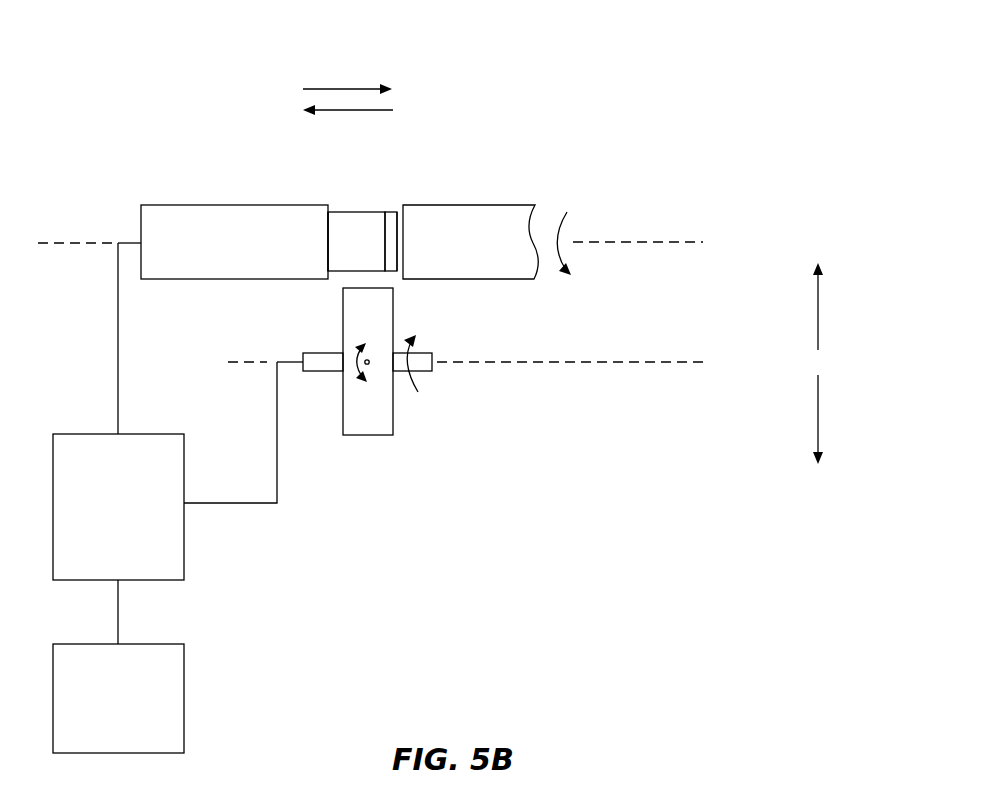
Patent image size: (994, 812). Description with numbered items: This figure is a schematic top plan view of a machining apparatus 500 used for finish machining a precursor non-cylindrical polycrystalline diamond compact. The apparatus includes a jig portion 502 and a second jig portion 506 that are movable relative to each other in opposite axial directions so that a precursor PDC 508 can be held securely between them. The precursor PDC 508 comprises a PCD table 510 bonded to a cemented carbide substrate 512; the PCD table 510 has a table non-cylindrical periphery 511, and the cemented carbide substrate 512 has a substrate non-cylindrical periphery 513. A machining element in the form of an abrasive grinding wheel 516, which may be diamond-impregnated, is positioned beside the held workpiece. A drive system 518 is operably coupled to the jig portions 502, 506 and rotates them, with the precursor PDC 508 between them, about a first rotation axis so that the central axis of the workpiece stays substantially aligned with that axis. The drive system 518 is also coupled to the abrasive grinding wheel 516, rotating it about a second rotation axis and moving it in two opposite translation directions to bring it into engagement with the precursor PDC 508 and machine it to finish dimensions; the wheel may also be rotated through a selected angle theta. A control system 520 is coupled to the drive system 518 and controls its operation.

The machining apparatus 500 is at (593, 106).
The jig portion 502 is at (202, 280).
The jig portion 506 is at (467, 280).
The precursor PDC 508 is at (364, 180).
The PCD table 510 is at (389, 230).
The table non-cylindrical periphery 511 is at (397, 208).
The cemented carbide substrate 512 is at (353, 232).
The substrate non-cylindrical periphery 513 is at (340, 208).
The abrasive grinding wheel 516 is at (394, 410).
The drive system 518 is at (100, 547).
The control system 520 is at (100, 735).